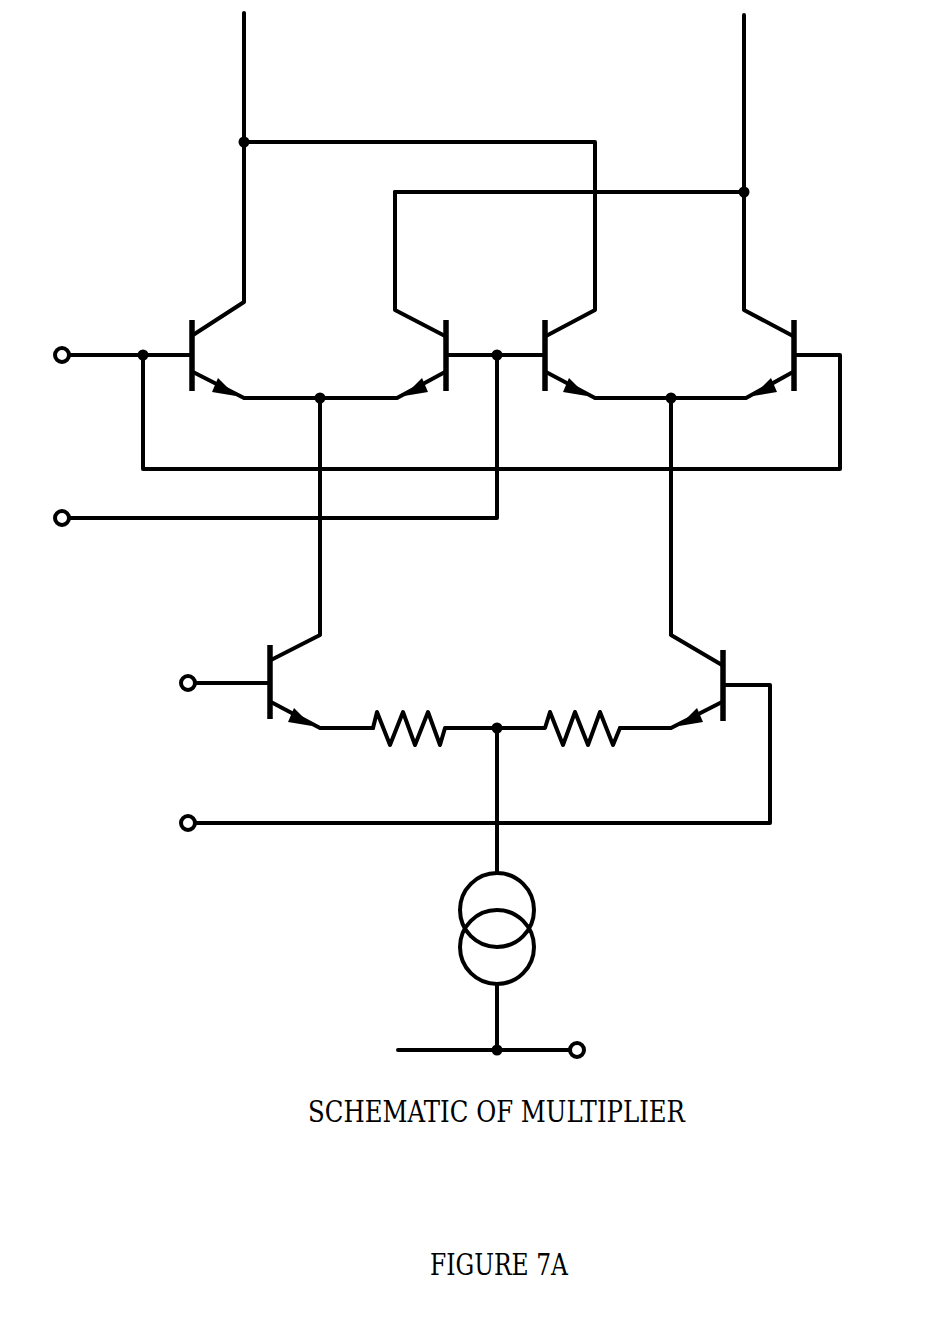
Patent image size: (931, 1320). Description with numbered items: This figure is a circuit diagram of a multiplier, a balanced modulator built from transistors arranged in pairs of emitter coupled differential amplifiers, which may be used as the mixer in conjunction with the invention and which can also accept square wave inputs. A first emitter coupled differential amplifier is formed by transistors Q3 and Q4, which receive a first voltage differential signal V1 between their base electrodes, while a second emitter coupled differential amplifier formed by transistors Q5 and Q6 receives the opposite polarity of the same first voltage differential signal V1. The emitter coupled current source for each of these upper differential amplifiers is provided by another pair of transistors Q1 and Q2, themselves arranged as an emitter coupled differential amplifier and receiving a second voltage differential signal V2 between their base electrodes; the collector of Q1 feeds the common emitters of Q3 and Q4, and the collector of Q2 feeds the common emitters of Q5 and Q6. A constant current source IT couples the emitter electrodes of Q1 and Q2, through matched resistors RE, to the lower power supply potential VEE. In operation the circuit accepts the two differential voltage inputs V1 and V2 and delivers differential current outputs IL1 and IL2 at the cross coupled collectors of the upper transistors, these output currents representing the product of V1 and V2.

The transistor Q1 is at (321, 563).
The transistor Q2 is at (671, 563).
The transistor Q3 is at (256, 359).
The transistor Q4 is at (432, 359).
The transistor Q5 is at (608, 359).
The transistor Q6 is at (732, 359).
The matched resistors RE is at (496, 709).
The constant current source IT is at (561, 900).
The differential current output IL1 is at (274, 28).
The differential current output IL2 is at (775, 30).
The first voltage differential signal V1 is at (432, 437).
The second voltage differential signal V2 is at (459, 753).
The lower power supply potential VEE is at (509, 1028).